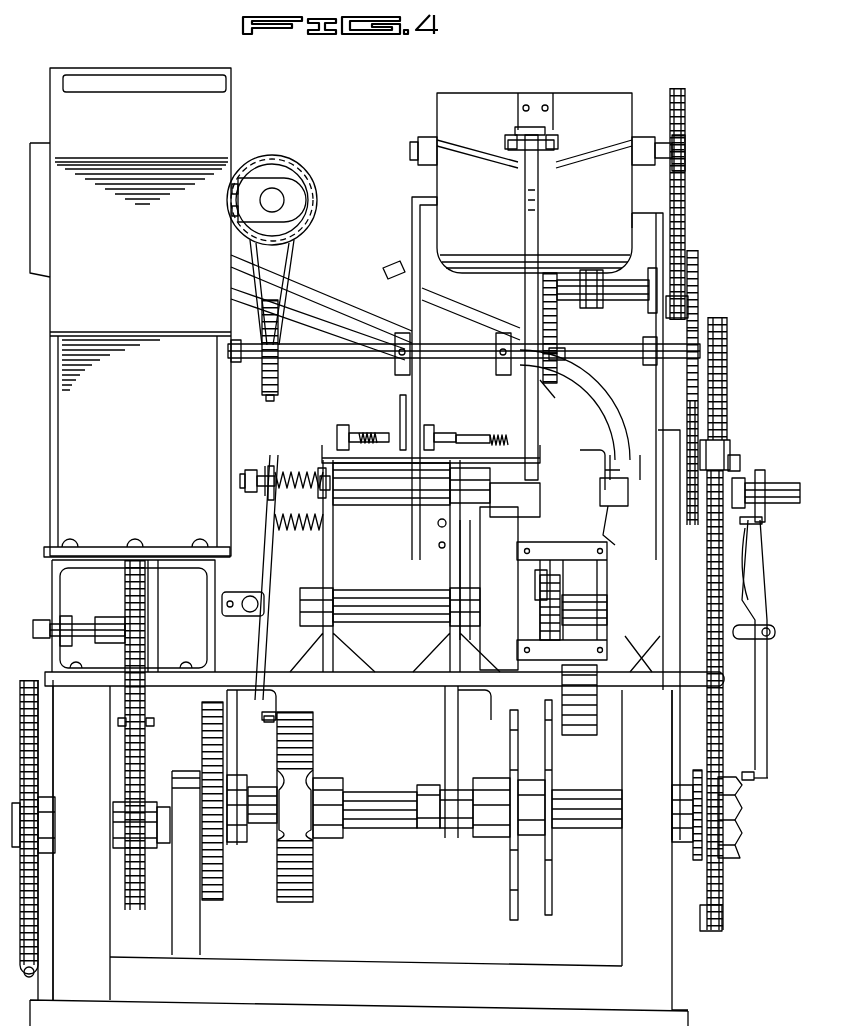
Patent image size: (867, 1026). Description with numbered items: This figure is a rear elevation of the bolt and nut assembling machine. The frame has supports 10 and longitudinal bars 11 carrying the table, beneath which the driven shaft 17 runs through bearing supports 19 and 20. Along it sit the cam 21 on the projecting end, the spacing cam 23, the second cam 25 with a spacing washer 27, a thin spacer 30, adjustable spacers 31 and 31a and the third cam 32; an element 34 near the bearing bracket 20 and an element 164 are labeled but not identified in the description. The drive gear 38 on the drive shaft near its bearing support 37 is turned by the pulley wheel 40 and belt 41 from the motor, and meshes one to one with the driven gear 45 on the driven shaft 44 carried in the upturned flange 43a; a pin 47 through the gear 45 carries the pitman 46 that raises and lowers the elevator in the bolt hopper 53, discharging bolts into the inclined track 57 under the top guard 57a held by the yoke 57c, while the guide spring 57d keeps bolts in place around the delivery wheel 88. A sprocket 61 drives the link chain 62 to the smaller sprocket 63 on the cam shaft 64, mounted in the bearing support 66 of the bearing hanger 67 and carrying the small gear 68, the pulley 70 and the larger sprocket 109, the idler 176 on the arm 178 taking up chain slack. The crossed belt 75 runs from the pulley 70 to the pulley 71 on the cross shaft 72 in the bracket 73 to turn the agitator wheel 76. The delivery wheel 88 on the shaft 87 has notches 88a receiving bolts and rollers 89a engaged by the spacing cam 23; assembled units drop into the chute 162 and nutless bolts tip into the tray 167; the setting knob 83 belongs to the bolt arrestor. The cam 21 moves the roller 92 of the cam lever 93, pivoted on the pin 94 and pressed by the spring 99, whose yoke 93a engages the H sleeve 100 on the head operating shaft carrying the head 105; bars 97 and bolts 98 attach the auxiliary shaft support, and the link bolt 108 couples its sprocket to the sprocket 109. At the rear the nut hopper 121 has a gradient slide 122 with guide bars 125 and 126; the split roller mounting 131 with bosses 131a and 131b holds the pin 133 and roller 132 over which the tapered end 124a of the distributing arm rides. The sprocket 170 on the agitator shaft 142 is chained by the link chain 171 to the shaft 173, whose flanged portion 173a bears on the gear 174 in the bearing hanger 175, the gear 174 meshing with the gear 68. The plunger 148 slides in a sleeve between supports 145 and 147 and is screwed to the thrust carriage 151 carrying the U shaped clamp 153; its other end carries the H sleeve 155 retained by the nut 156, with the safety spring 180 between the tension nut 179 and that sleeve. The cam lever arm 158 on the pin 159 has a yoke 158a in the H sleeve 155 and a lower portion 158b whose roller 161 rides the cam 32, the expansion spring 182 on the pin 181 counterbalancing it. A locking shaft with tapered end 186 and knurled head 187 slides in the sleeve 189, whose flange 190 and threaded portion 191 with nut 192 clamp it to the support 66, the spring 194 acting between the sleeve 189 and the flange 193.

The supports 10 is at (110, 945).
The longitudinal bars 11 is at (445, 970).
The driven shaft 17 is at (395, 792).
The bearing support 19 is at (445, 725).
The bearing support 20 is at (237, 752).
The cam 21 is at (736, 810).
The spacing cam 23 is at (552, 866).
The second cam 25 is at (510, 892).
The spacing washer 27 is at (490, 778).
The thin spacer 30 is at (447, 790).
The adjustable spacer 31 is at (430, 785).
The adjustable spacer 31a is at (328, 778).
The third cam 32 is at (313, 720).
The gear 34 is at (202, 714).
The bearing support 37 is at (185, 768).
The drive gear 38 is at (128, 910).
The pulley wheel 40 is at (36, 790).
The belt 41 is at (29, 978).
The upturned flange 43a is at (112, 620).
The driven shaft 44 is at (80, 628).
The driven gear 45 is at (145, 612).
The pivoting operating arm or pitman 46 is at (158, 640).
The pin 47 is at (152, 722).
The bolt hopper 53 is at (222, 113).
The gradient or inclined track 57 is at (318, 290).
The top guard 57a is at (396, 270).
The yoke 57c is at (610, 470).
The guide spring 57d is at (612, 530).
The sprocket 61 is at (695, 770).
The link chain 62 is at (723, 906).
The second smaller sprocket 63 is at (698, 403).
The cam shaft 64 is at (727, 348).
The bearing support 66 is at (412, 222).
The bearing hanger 67 is at (648, 213).
The small gear 68 is at (549, 390).
The pulley 70 is at (276, 372).
The pulley 71 is at (284, 188).
The cross shaft 72 is at (280, 197).
The bracket 73 is at (250, 190).
The crossed belt 75 is at (256, 330).
The agitator wheel 76 is at (316, 205).
The setting knob 83 is at (438, 524).
The shaft 87 is at (358, 598).
The delivery wheel 88 is at (578, 720).
The spaced grooves or notches 88a is at (572, 588).
The rollers 89a is at (535, 585).
The roller 92 is at (750, 772).
The cam lever 93 is at (767, 615).
The yoke 93a is at (762, 535).
The pin 94 is at (775, 632).
The bars 97 is at (690, 575).
The bolts 98 is at (645, 612).
The spring 99 is at (748, 598).
The H sleeve 100 is at (765, 518).
The head 105 is at (790, 482).
The link bolt 108 is at (698, 310).
The larger sprocket 109 is at (698, 287).
The nut hopper 121 is at (610, 110).
The gradient slide or chute 122 is at (535, 405).
The tapered end 124a is at (540, 128).
The guide bar 125 is at (512, 291).
The guide bar 126 is at (557, 360).
The split roller mounting 131 is at (548, 108).
The split boss 131a is at (505, 139).
The split boss 131b is at (556, 138).
The roller 132 is at (530, 162).
The pin 133 is at (508, 146).
The agitator shaft 142 is at (660, 150).
The support 145 is at (450, 570).
The support 147 is at (333, 556).
The reciprocating plunger 148 is at (470, 490).
The elongated thrust carriage 151 is at (485, 540).
The U shaped clamp 153 is at (505, 500).
The H sleeve 155 is at (268, 470).
The nut 156 is at (250, 470).
The cam lever arm 158 is at (264, 580).
The upper yoke portion 158a is at (268, 496).
The lower portion 158b is at (262, 718).
The pin 159 is at (250, 596).
The roller 161 is at (268, 716).
The chute 162 is at (580, 580).
The roller 164 is at (352, 500).
The tray 167 is at (668, 680).
The sprocket 170 is at (685, 150).
The link chain 171 is at (686, 212).
The shaft 173 is at (622, 300).
The flanged center portion 173a is at (590, 312).
The gear 174 is at (552, 275).
The bearing hanger 175 is at (560, 318).
The idler 176 is at (716, 455).
The arm 178 is at (736, 460).
The adjustable tension nut 179 is at (322, 468).
The safety spring 180 is at (300, 472).
The pin 181 is at (296, 496).
The expansion spring 182 is at (290, 532).
The tapered end 186 is at (525, 412).
The knurled head 187 is at (343, 425).
The sleeve 189 is at (380, 436).
The flange 190 is at (402, 404).
The threaded portion 191 is at (440, 433).
The nut 192 is at (429, 425).
The flange 193 is at (365, 433).
The spring 194 is at (470, 435).